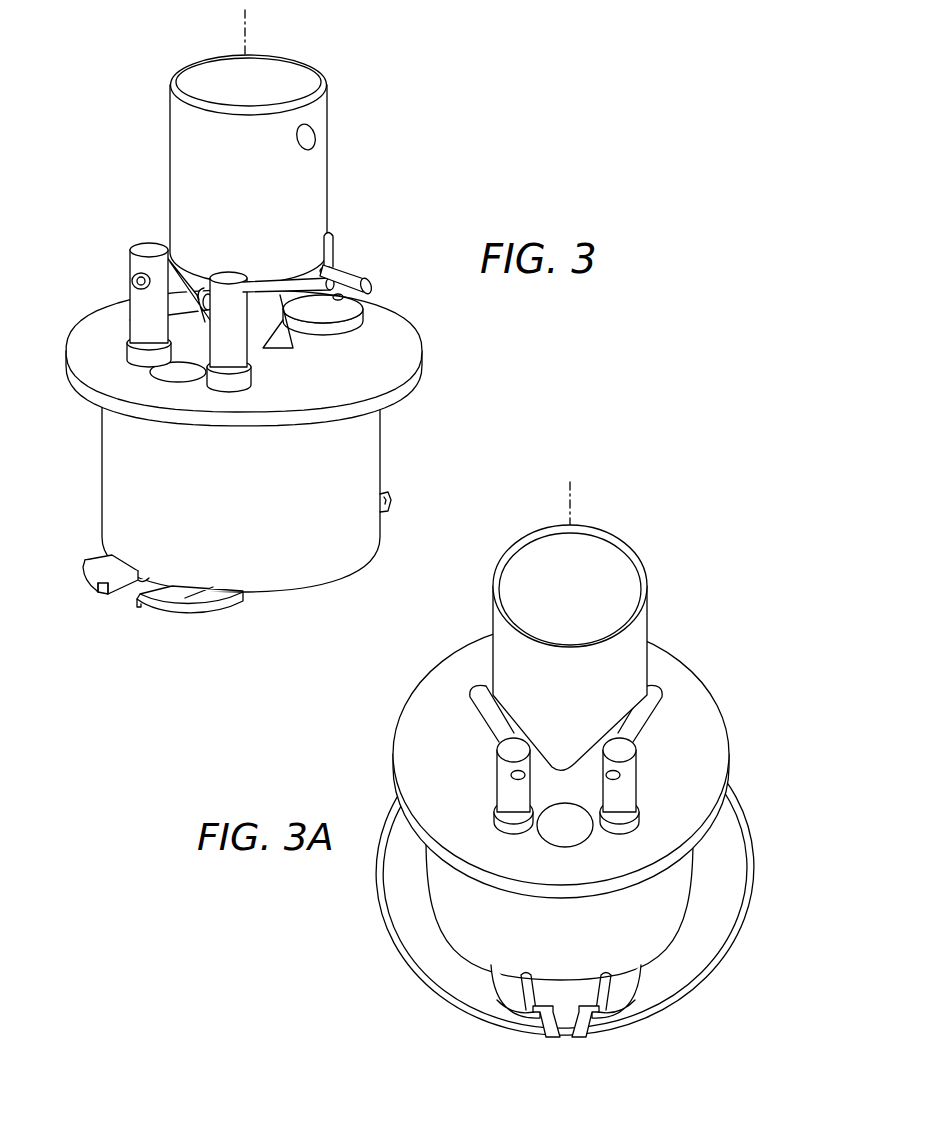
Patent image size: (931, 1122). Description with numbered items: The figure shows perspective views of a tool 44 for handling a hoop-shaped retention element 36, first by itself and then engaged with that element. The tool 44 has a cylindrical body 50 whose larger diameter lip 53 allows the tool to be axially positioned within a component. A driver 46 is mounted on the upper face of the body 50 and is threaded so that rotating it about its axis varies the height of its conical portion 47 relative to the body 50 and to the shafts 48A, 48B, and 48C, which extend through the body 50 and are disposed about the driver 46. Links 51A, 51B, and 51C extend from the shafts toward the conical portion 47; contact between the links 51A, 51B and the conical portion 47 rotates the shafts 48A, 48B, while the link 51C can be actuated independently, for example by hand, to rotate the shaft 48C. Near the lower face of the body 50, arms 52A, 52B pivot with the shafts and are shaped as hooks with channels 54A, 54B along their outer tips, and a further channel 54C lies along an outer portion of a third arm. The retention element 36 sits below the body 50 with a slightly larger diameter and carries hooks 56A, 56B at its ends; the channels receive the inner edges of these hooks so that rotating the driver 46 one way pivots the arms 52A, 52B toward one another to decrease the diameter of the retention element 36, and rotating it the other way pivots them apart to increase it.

In FIG. 3A, the retention element 36 is at (432, 993).
In FIG. 3, the tool 44 is at (407, 140).
In FIG. 3A, the tool 44 is at (683, 607).
In FIG. 3, the driver 46 is at (315, 183).
In FIG. 3A, the driver 46 is at (615, 672).
In FIG. 3, the conical portion 47 is at (130, 320).
In FIG. 3, the shaft 48A is at (132, 300).
In FIG. 3A, the shaft 48A is at (500, 793).
In FIG. 3, the shaft 48B is at (240, 343).
In FIG. 3A, the shaft 48B is at (632, 793).
In FIG. 3, the shaft 48C is at (333, 240).
In FIG. 3, the body 50 is at (367, 458).
In FIG. 3A, the body 50 is at (678, 892).
In FIG. 3, the link 51A is at (160, 248).
In FIG. 3A, the link 51A is at (470, 695).
In FIG. 3, the link 51B is at (280, 305).
In FIG. 3A, the link 51B is at (662, 697).
In FIG. 3, the link 51C is at (350, 275).
In FIG. 3, the arm 52A is at (97, 563).
In FIG. 3A, the arm 52A is at (507, 985).
In FIG. 3, the arm 52B is at (192, 598).
In FIG. 3A, the arm 52B is at (622, 985).
In FIG. 3, the lip 53 is at (397, 392).
In FIG. 3A, the lip 53 is at (722, 828).
In FIG. 3, the channel 54A is at (104, 596).
In FIG. 3A, the channel 54A is at (538, 1008).
In FIG. 3, the channel 54B is at (140, 608).
In FIG. 3A, the channel 54B is at (584, 1008).
In FIG. 3, the channel 54C is at (391, 507).
In FIG. 3A, the hook 56A is at (538, 1030).
In FIG. 3A, the hook 56B is at (585, 1025).